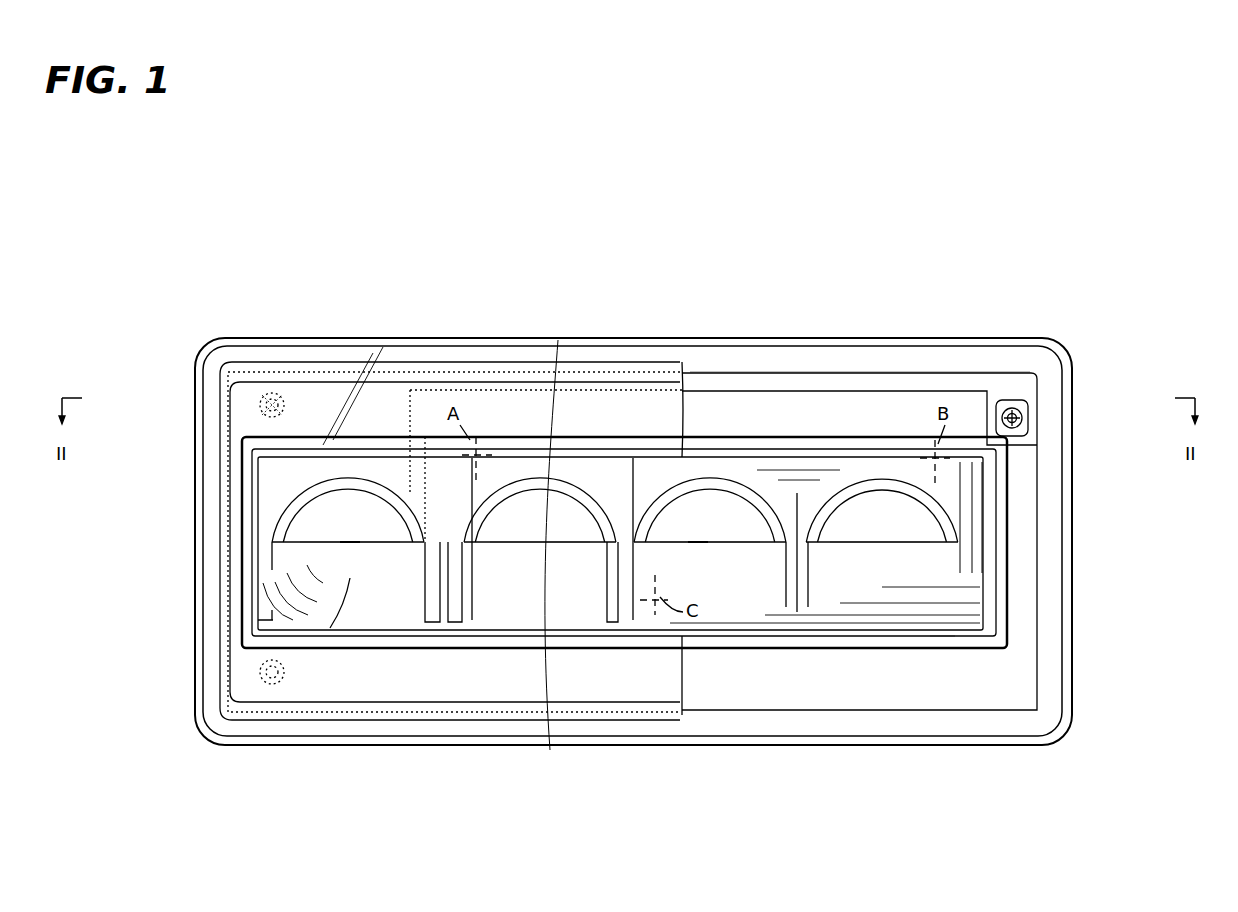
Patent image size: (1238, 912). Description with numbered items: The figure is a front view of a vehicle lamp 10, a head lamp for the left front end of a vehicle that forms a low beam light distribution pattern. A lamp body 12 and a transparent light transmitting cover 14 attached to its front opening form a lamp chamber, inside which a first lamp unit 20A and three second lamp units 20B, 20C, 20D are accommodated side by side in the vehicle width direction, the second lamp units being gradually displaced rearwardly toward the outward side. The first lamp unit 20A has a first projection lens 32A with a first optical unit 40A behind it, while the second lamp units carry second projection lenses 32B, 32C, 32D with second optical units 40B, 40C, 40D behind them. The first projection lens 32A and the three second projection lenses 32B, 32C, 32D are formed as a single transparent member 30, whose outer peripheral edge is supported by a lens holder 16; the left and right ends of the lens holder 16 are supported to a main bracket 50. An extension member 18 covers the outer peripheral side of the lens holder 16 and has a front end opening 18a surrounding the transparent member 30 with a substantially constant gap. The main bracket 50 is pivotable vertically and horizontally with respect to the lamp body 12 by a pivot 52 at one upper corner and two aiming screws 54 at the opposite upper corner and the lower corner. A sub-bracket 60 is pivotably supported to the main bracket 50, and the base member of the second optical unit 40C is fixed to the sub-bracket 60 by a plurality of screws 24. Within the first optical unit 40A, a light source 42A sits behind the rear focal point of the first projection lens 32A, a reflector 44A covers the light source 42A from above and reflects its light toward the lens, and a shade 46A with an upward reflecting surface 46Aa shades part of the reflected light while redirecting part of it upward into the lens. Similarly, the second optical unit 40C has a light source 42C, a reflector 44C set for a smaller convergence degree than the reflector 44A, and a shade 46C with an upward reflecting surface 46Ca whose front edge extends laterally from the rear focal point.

The vehicle lamp 10 is at (345, 213).
The lamp body 12 is at (1012, 338).
The light transmitting cover 14 is at (252, 338).
The lens holder 16 is at (1012, 602).
The extension member 18 is at (652, 718).
The front end opening 18a is at (320, 591).
The first lamp unit 20A is at (358, 460).
The second lamp unit 20B is at (542, 462).
The second lamp unit 20C is at (718, 464).
The second lamp unit 20D is at (894, 464).
The screws 24 is at (943, 635).
The transparent member 30 is at (803, 635).
The first projection lens 32A is at (368, 632).
The second projection lens 32B is at (548, 632).
The second projection lens 32C is at (728, 632).
The second projection lens 32D is at (903, 632).
The first optical unit 40A is at (280, 497).
The second optical unit 40B is at (586, 480).
The second optical unit 40C is at (740, 478).
The second optical unit 40D is at (948, 497).
The light source 42A is at (347, 542).
The light source 42C is at (695, 542).
The reflector 44A is at (280, 517).
The reflector 44C is at (773, 520).
The shade 46A is at (412, 578).
The upward reflecting surface 46Aa is at (332, 542).
The shade 46C is at (770, 573).
The upward reflecting surface 46Ca is at (677, 542).
The main bracket 50 is at (818, 370).
The pivot 52 is at (268, 400).
The aiming screws 54 is at (1018, 413).
The sub-bracket 60 is at (838, 436).